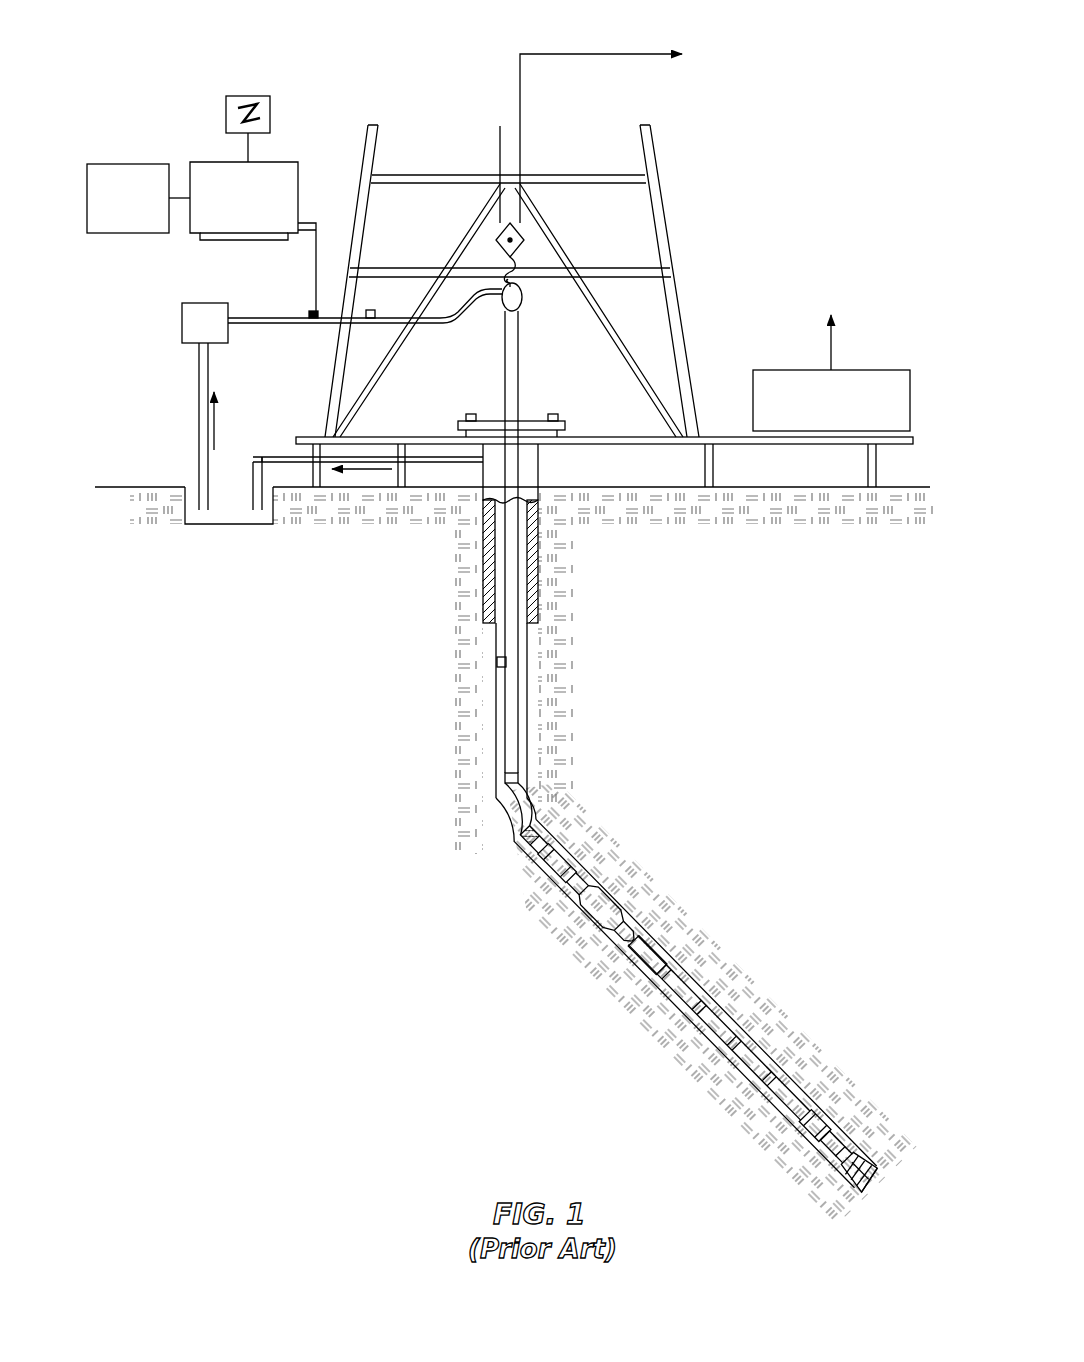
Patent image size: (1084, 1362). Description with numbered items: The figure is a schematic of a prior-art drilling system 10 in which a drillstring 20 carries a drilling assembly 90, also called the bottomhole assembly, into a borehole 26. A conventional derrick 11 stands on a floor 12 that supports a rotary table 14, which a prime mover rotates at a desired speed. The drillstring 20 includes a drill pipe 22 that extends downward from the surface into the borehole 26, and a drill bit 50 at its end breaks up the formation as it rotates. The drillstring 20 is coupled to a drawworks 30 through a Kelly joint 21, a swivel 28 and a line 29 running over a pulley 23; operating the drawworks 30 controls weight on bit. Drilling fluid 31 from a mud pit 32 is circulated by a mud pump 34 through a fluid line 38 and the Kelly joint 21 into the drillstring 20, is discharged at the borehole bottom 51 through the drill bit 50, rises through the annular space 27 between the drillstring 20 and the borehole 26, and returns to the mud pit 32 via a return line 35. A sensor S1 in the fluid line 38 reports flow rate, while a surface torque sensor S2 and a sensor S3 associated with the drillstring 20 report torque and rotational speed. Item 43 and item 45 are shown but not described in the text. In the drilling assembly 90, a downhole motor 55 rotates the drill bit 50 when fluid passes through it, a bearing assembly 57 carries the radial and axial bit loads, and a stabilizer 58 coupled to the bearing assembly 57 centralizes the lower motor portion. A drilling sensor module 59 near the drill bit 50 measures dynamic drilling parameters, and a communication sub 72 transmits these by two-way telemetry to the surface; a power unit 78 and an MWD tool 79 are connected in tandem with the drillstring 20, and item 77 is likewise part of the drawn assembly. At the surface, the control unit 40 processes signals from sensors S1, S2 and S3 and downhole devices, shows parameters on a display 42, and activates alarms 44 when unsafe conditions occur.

The drilling system 10 is at (427, 77).
The derrick 11 is at (675, 288).
The floor 12 is at (711, 437).
The rotary table 14 is at (530, 421).
The drillstring 20 is at (528, 718).
The Kelly joint 21 is at (519, 385).
The drill pipe 22 is at (497, 690).
The pulley 23 is at (518, 252).
The borehole 26 is at (532, 812).
The annular space 27 is at (533, 840).
The swivel 28 is at (507, 304).
The line 29 is at (521, 150).
The drawworks 30 is at (890, 370).
The drilling fluid 31 is at (188, 514).
The mud pit 32 is at (250, 518).
The mud pump 34 is at (183, 320).
The return line 35 is at (407, 462).
The fluid line 38 is at (201, 400).
The surface control unit 40 is at (214, 162).
The display/monitor 42 is at (250, 98).
The flow sensor 43 is at (309, 312).
The alarms 44 is at (148, 234).
The signal line 45 is at (308, 222).
The drill bit 50 is at (860, 1170).
The borehole bottom 51 is at (869, 1180).
The downhole motor 55 is at (719, 1028).
The bearing assembly 57 is at (815, 1126).
The stabilizer 58 is at (832, 1143).
The drilling sensor module 59 is at (844, 1155).
The communication sub 72 is at (497, 800).
The MWD tool 77 is at (608, 914).
The power unit 78 is at (557, 863).
The MWD tool 79 is at (578, 884).
The drilling assembly 90 is at (748, 891).
The sensor S1 is at (378, 290).
The surface torque sensor S2 is at (558, 414).
The sensor S3 is at (466, 414).